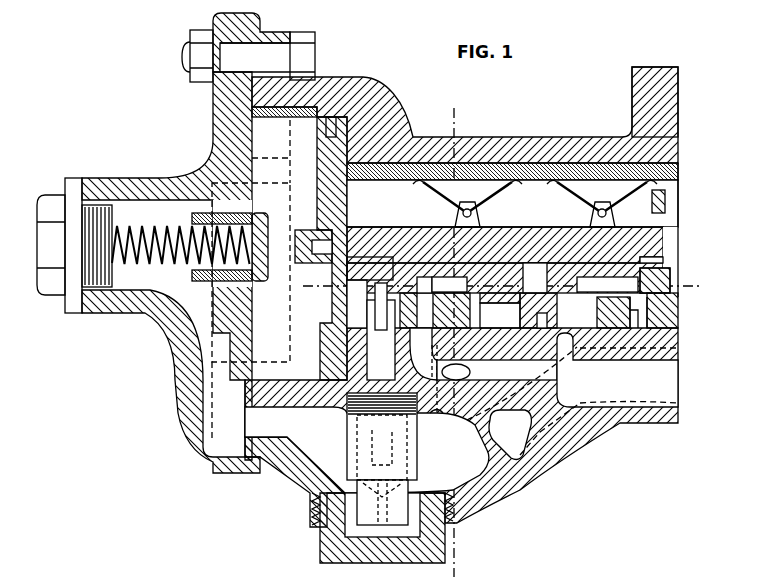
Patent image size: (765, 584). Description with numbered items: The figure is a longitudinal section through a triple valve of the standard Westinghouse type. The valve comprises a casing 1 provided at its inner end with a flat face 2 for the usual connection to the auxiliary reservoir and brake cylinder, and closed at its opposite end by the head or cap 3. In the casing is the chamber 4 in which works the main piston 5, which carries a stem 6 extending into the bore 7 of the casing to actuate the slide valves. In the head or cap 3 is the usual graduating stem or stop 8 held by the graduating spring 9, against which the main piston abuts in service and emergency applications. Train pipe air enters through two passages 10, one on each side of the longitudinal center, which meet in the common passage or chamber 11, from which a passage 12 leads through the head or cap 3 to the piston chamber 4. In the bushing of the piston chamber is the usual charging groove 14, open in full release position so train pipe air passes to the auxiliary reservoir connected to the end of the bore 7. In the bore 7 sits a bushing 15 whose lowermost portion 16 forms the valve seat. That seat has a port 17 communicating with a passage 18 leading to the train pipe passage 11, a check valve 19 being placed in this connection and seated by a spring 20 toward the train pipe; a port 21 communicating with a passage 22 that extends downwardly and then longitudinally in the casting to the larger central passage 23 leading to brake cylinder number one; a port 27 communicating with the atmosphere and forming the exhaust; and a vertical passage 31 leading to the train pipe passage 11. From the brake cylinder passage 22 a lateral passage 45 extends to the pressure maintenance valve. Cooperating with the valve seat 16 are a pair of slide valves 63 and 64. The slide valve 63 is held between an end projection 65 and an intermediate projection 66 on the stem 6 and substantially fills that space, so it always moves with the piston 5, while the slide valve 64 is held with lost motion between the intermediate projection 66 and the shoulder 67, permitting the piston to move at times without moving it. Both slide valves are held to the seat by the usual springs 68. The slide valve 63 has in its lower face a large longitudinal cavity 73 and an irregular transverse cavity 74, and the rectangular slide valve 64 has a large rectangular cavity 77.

The casing 1 is at (495, 146).
The flat face 2 is at (678, 142).
The head or cap 3 is at (183, 383).
The chamber 4 is at (307, 248).
The main piston 5 is at (327, 190).
The stem 6 is at (448, 237).
The bore 7 is at (512, 203).
The graduating stem or stop 8 is at (260, 274).
The graduating spring 9 is at (166, 249).
The passages 10 is at (510, 434).
The common passage or chamber 11 is at (493, 480).
The passage 12 is at (248, 280).
The charging groove 14 is at (318, 119).
The bushing 15 is at (679, 174).
The valve seat 16 is at (663, 317).
The port 17 is at (391, 312).
The passage 18 is at (378, 332).
The check valve 19 is at (408, 448).
The spring 20 is at (368, 430).
The port 21 is at (410, 312).
The passage 22 is at (497, 373).
The passage 23 is at (617, 370).
The port 27 is at (608, 314).
The vertical passage 31 is at (436, 412).
The lateral passage 45 is at (460, 374).
The slide valve 63 is at (670, 275).
The slide valve 64 is at (408, 299).
The end projection 65 is at (663, 262).
The intermediate projection 66 is at (583, 228).
The shoulder 67 is at (385, 282).
The springs 68 is at (562, 188).
The longitudinal cavity 73 is at (607, 283).
The transverse cavity 74 is at (599, 310).
The cavity 77 is at (449, 283).